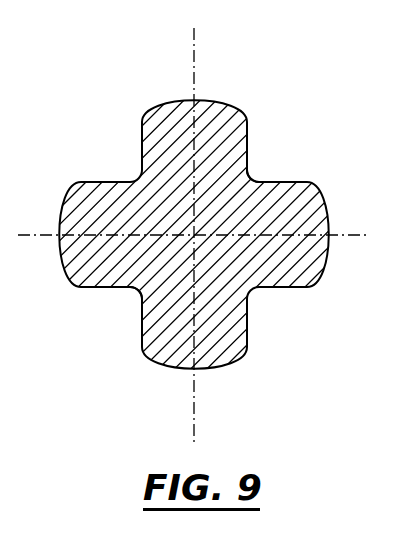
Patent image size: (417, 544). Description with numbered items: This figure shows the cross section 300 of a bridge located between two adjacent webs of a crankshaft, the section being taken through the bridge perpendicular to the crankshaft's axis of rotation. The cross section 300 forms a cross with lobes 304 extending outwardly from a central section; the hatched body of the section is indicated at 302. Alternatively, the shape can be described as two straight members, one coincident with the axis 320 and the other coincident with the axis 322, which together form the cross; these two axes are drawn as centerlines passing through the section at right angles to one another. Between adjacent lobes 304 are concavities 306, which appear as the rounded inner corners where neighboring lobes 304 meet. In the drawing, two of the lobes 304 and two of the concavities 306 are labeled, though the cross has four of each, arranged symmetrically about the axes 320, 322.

The cross section 300 is at (208, 229).
The body 302 is at (220, 223).
The lobes 304 is at (168, 153).
The concavities 306 is at (250, 177).
The axis 320 is at (194, 52).
The axis 322 is at (33, 236).